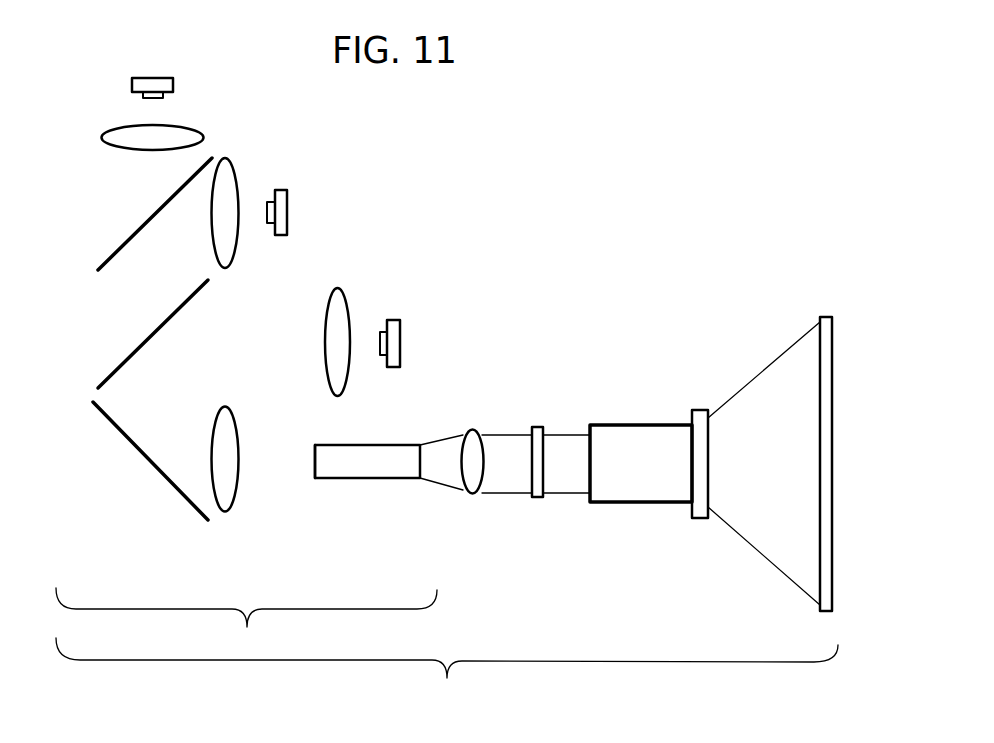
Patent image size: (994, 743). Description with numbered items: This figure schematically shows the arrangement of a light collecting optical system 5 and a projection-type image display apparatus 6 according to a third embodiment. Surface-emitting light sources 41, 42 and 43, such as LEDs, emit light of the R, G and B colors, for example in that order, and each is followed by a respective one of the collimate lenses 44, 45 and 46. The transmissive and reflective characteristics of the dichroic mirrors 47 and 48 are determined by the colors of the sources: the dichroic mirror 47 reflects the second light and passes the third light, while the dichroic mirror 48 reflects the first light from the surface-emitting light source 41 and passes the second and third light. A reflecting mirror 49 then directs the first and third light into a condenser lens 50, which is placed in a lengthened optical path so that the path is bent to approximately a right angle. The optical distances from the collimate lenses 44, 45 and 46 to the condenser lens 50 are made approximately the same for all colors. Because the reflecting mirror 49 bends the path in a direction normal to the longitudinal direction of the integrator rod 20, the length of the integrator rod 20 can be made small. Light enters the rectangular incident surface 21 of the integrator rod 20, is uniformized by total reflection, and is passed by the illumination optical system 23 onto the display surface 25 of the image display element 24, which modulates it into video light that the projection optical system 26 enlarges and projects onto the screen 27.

The light collecting optical system 5 is at (246, 621).
The projection-type image display apparatus 6 is at (447, 675).
The integrator rod 20 is at (367, 431).
The incident surface 21 is at (299, 488).
The illumination optical system 23 is at (480, 431).
The image display element 24 is at (547, 434).
The display surface 25 is at (587, 499).
The projection optical system 26 is at (709, 434).
The screen 27 is at (815, 435).
The surface-emitting light source 41 is at (401, 310).
The surface-emitting light source 42 is at (289, 180).
The surface-emitting light source 43 is at (157, 55).
The collimate lens 44 is at (358, 306).
The collimate lens 45 is at (245, 177).
The collimate lens 46 is at (125, 106).
The dichroic mirror 47 is at (127, 214).
The dichroic mirror 48 is at (125, 334).
The reflecting mirror 49 is at (125, 461).
The condenser lens 50 is at (217, 496).